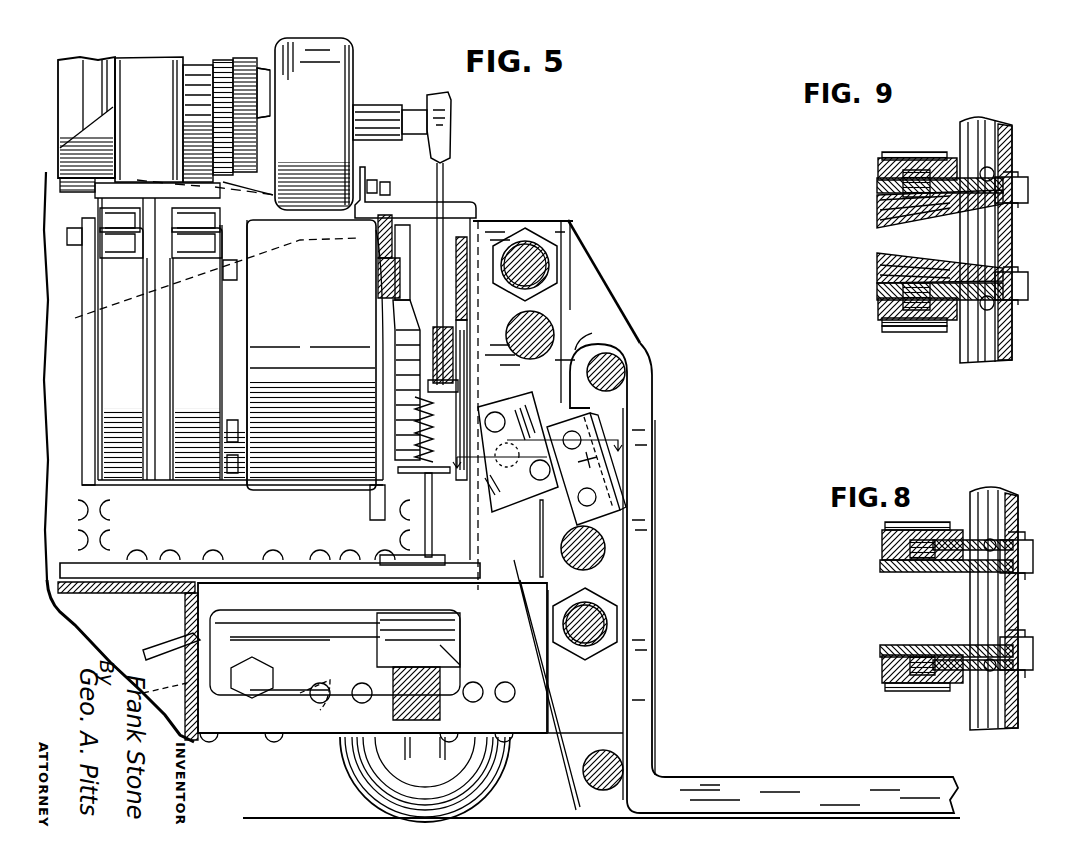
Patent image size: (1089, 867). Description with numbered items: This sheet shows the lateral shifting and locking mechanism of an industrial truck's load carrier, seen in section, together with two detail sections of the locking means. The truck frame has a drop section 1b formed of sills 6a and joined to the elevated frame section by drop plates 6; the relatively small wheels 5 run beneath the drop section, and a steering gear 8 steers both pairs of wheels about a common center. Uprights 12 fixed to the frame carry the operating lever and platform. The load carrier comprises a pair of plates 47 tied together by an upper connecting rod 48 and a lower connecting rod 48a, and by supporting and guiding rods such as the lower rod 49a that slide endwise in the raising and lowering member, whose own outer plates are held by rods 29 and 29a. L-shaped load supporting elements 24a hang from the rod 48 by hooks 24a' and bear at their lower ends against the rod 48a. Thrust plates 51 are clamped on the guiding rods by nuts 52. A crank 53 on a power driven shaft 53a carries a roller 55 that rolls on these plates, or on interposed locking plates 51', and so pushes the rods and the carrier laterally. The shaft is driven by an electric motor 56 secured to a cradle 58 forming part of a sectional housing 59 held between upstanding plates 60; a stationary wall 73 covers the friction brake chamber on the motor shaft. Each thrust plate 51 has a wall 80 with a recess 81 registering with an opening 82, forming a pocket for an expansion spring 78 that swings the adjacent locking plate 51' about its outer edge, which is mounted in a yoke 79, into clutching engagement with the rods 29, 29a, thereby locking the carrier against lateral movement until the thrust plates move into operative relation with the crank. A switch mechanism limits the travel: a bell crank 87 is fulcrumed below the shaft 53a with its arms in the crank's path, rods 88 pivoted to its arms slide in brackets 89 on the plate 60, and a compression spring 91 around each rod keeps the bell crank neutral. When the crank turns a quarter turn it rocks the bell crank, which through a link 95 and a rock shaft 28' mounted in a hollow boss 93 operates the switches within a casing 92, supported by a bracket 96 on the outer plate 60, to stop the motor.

In FIG. 5, the drop section 1b is at (240, 737).
In FIG. 5, the relatively small wheels 5 is at (332, 782).
In FIG. 5, the drop plates 6 is at (45, 368).
In FIG. 5, the sills 6a is at (68, 614).
In FIG. 5, the steering gear 8 is at (158, 630).
In FIG. 5, the uprights 12 is at (500, 232).
In FIG. 9, the uprights 12 is at (912, 152).
In FIG. 5, the load supporting elements 24a is at (810, 771).
In FIG. 5, the hooks 24a' is at (619, 321).
In FIG. 5, the rock shaft 28' is at (426, 113).
In FIG. 5, the rod 29 is at (560, 330).
In FIG. 5, the rod 29a is at (605, 545).
In FIG. 9, the rod 29a is at (980, 352).
In FIG. 8, the rod 29a is at (1005, 492).
In FIG. 5, the plates 47 is at (593, 263).
In FIG. 5, the upper connecting rod 48 is at (622, 360).
In FIG. 5, the lower connecting rod 48a is at (585, 773).
In FIG. 5, the lower supporting and guiding rod 49a is at (600, 610).
In FIG. 5, the thrust plates 51 is at (568, 293).
In FIG. 9, the thrust plates 51 is at (940, 238).
In FIG. 8, the thrust plates 51 is at (973, 602).
In FIG. 9, the locking plates 51' is at (917, 236).
In FIG. 8, the locking plates 51' is at (932, 608).
In FIG. 5, the nuts 52 is at (528, 235).
In FIG. 5, the crank 53 is at (378, 297).
In FIG. 5, the power driven shaft 53a is at (373, 333).
In FIG. 5, the roller 55 is at (460, 235).
In FIG. 5, the electric motor 56 is at (58, 110).
In FIG. 5, the cradle 58 is at (70, 190).
In FIG. 5, the sectional housing 59 is at (198, 492).
In FIG. 5, the upstanding plates 60 is at (100, 492).
In FIG. 5, the stationary wall 73 is at (262, 150).
In FIG. 9, the springs 78 is at (912, 212).
In FIG. 5, the yokes 79 is at (628, 480).
In FIG. 9, the yokes 79 is at (1030, 186).
In FIG. 8, the yokes 79 is at (1036, 558).
In FIG. 5, the wall 80 is at (507, 412).
In FIG. 9, the wall 80 is at (878, 162).
In FIG. 8, the wall 80 is at (882, 546).
In FIG. 9, the recess 81 is at (903, 328).
In FIG. 8, the recess 81 is at (920, 526).
In FIG. 9, the opening 82 is at (903, 184).
In FIG. 5, the bell crank 87 is at (455, 375).
In FIG. 5, the rods 88 is at (430, 548).
In FIG. 5, the brackets 89 is at (438, 478).
In FIG. 5, the compression spring 91 is at (433, 440).
In FIG. 5, the casing 92 is at (314, 124).
In FIG. 5, the hollow boss 93 is at (368, 106).
In FIG. 5, the link 95 is at (436, 176).
In FIG. 5, the bracket 96 is at (364, 170).